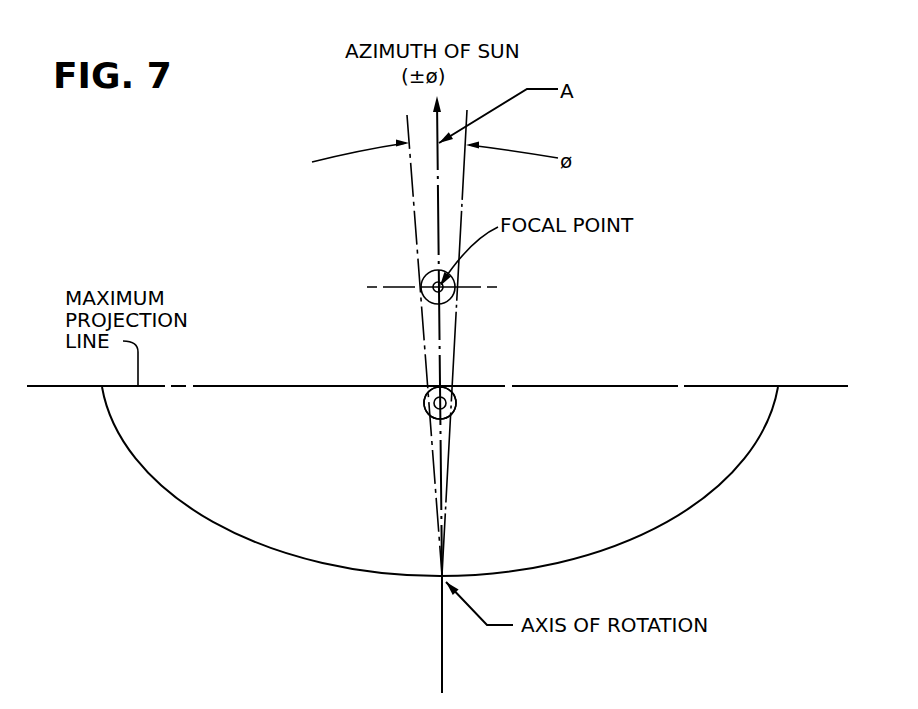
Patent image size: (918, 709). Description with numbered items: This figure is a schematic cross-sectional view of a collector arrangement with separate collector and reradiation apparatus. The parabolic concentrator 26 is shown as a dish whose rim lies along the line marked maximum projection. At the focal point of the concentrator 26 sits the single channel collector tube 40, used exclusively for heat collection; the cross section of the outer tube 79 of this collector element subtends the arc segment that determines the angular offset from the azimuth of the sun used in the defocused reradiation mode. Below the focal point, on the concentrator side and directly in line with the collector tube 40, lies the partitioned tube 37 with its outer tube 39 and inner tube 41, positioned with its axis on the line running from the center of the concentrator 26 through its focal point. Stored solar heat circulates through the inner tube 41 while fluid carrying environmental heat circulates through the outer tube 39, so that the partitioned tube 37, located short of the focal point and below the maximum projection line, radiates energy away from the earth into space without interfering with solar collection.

The concentrator 26 is at (738, 466).
The partitioned tube 37 is at (427, 412).
The outer tube 39 is at (424, 393).
The single channel collector tube 40 is at (436, 286).
The inner tube 41 is at (452, 413).
The outer tube of the collector element 79 is at (451, 296).